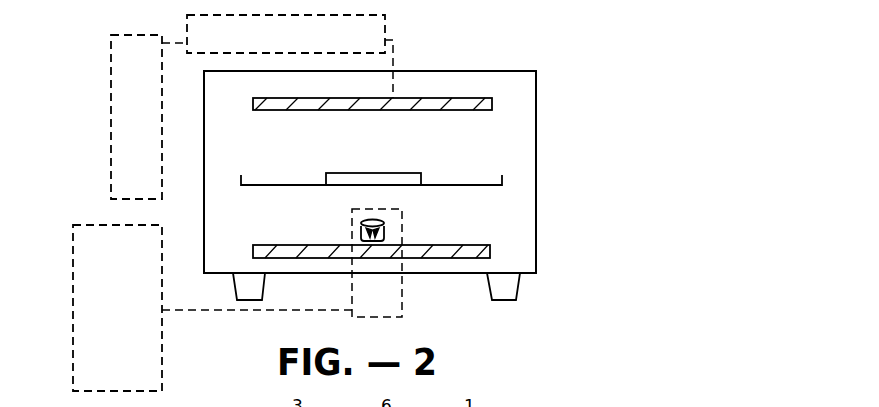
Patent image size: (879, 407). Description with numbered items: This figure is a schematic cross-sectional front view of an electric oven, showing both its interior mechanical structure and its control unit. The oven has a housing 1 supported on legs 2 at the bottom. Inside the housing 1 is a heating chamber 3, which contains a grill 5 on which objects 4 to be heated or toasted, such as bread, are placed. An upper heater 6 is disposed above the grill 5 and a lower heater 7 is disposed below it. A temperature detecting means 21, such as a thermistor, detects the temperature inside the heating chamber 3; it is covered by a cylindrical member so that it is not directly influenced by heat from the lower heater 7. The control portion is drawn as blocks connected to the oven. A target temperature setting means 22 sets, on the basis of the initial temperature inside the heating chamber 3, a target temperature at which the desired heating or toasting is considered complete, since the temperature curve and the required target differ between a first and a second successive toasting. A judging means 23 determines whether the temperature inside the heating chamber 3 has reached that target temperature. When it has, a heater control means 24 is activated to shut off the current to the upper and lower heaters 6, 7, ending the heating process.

The housing 1 is at (498, 71).
The legs 2 is at (248, 300).
The heating chamber 3 is at (518, 130).
The objects to be heated 4 is at (369, 173).
The grill 5 is at (293, 185).
The upper heater 6 is at (408, 98).
The lower heater 7 is at (467, 251).
The temperature detecting means 21 is at (384, 229).
The target temperature setting means 22 is at (73, 340).
The judging means 23 is at (111, 108).
The heater control means 24 is at (368, 15).